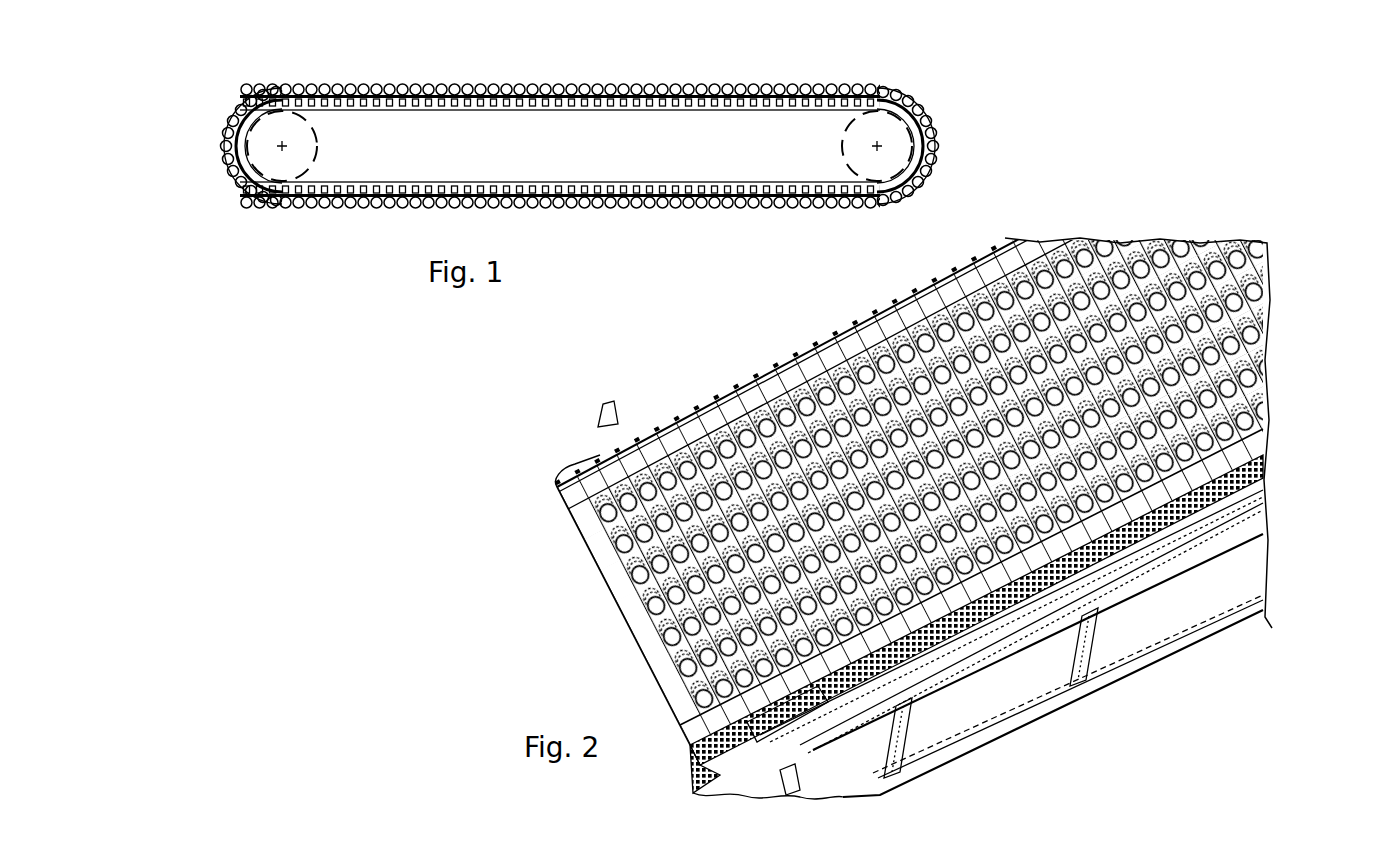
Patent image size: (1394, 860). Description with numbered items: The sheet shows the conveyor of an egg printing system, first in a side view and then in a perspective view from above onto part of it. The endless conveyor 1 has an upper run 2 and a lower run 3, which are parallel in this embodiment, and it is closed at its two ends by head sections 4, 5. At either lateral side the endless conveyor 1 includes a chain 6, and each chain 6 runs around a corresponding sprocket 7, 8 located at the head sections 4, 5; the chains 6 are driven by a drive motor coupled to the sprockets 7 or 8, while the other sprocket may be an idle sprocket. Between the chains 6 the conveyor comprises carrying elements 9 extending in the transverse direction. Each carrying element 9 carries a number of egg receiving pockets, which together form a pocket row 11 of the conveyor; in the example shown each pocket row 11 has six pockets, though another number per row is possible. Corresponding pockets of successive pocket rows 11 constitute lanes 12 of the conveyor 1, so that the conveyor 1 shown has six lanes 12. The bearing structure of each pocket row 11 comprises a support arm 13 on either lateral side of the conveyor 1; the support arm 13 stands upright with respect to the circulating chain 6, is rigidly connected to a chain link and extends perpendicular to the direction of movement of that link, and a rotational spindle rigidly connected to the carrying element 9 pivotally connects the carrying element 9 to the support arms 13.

In FIG. 1, the endless conveyor 1 is at (579, 148).
In FIG. 1, the upper run 2 is at (606, 78).
In FIG. 1, the lower run 3 is at (600, 214).
In FIG. 1, the head section 4 is at (214, 126).
In FIG. 1, the head section 5 is at (957, 134).
In FIG. 1, the chain 6 is at (663, 103).
In FIG. 2, the chain 6 is at (742, 380).
In FIG. 1, the sprocket 7 is at (300, 142).
In FIG. 2, the sprocket 7 is at (740, 790).
In FIG. 1, the sprocket 8 is at (850, 141).
In FIG. 2, the carrying element 9 is at (605, 486).
In FIG. 2, the pocket row 11 is at (883, 247).
In FIG. 2, the lane 12 is at (1167, 227).
In FIG. 2, the support arm 13 is at (1232, 514).